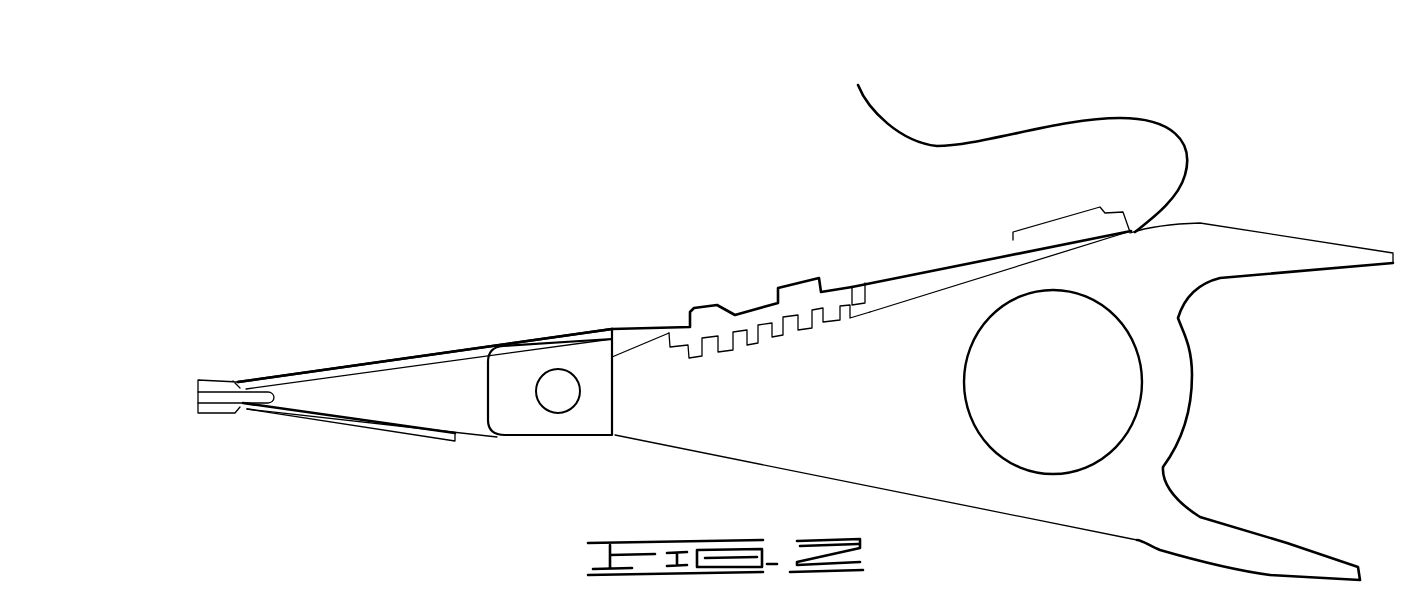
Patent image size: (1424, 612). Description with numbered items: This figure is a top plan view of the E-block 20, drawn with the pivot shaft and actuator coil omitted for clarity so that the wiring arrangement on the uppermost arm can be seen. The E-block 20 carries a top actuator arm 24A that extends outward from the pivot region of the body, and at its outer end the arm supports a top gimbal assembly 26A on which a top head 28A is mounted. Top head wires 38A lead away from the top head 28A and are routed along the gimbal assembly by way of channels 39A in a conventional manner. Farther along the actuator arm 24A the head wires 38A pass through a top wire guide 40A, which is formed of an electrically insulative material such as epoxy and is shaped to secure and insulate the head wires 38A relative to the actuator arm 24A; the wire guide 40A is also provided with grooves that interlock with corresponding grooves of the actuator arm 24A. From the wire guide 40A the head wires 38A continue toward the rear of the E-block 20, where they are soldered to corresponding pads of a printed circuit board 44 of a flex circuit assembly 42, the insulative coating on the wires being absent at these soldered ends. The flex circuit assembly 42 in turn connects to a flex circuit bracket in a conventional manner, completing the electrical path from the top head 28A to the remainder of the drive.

The E-block 20 is at (507, 217).
The top actuator arm 24A is at (900, 465).
The top gimbal assembly 26A is at (384, 410).
The top head 28A is at (216, 414).
The top head wires 38A is at (633, 328).
The channels 39A is at (390, 352).
The top wire guide 40A is at (705, 306).
The flex circuit assembly 42 is at (938, 147).
The printed circuit board 44 is at (934, 262).